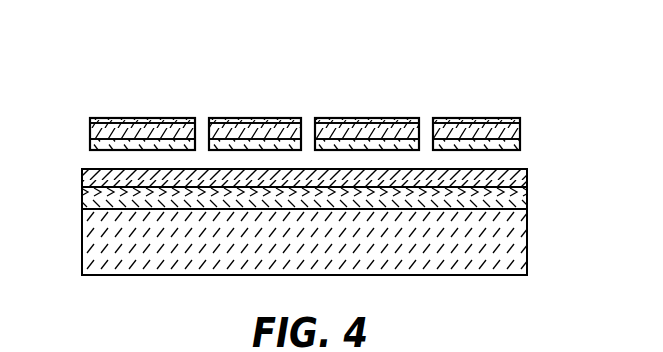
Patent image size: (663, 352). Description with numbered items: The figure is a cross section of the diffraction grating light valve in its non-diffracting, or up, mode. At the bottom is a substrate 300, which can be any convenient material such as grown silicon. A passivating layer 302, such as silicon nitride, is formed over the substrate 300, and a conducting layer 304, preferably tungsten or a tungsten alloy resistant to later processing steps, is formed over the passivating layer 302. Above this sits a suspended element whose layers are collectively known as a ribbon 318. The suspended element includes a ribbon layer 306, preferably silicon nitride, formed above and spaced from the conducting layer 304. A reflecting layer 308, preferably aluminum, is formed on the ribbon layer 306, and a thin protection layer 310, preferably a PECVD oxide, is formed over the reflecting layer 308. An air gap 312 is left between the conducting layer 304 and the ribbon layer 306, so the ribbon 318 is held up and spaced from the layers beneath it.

The substrate 300 is at (527, 258).
The passivating layer 302 is at (527, 197).
The conducting layer 304 is at (527, 173).
The ribbon layer 306 is at (90, 143).
The reflecting layer 308 is at (90, 131).
The protection layer 310 is at (312, 122).
The air gap 312 is at (96, 162).
The ribbon 318 is at (220, 92).